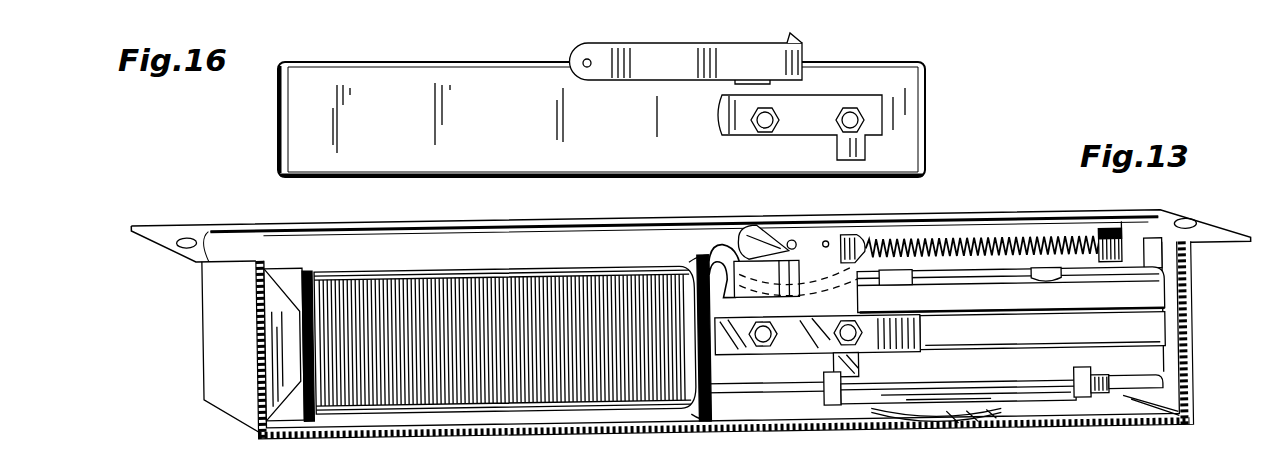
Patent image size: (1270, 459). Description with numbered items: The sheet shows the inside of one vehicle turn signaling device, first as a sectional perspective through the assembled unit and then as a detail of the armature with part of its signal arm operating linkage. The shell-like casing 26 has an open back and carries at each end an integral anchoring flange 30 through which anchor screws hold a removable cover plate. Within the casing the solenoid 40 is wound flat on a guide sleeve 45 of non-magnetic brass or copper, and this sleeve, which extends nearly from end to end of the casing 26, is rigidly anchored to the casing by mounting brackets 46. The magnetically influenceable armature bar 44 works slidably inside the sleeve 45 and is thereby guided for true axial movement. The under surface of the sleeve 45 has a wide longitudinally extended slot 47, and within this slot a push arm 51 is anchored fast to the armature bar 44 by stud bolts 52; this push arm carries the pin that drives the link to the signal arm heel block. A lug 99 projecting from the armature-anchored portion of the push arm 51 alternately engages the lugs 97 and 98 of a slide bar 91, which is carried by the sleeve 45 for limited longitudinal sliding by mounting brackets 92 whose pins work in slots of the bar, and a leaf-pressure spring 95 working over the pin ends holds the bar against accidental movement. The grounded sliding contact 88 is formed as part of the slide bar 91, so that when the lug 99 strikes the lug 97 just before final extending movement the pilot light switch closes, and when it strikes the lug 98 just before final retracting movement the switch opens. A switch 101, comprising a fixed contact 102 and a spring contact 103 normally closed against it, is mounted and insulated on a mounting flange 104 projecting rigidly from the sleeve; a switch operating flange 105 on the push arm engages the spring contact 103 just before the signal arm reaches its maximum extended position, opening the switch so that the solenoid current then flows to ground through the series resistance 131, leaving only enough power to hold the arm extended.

In FIG. 13, the casing 26 is at (220, 368).
In FIG. 13, the anchoring flange 30 is at (195, 255).
In FIG. 13, the solenoid 40 is at (438, 267).
In FIG. 16, the armature bar 44 is at (601, 119).
In FIG. 13, the armature bar 44 is at (927, 336).
In FIG. 13, the guide sleeve 45 is at (1153, 303).
In FIG. 13, the mounting bracket 46 is at (282, 323).
In FIG. 13, the slot 47 is at (1152, 324).
In FIG. 16, the push arm 51 is at (672, 75).
In FIG. 13, the push arm 51 is at (738, 272).
In FIG. 16, the stud bolts 52 is at (765, 133).
In FIG. 13, the stud bolts 52 is at (763, 335).
In FIG. 13, the sliding contact 88 is at (1108, 388).
In FIG. 13, the slide bar 91 is at (1085, 406).
In FIG. 13, the mounting brackets 92 is at (935, 394).
In FIG. 13, the leaf-pressure spring 95 is at (990, 423).
In FIG. 13, the slide bar lug 97 is at (824, 380).
In FIG. 13, the slide bar lug 98 is at (1085, 373).
In FIG. 16, the lug 99 is at (852, 165).
In FIG. 13, the lug 99 is at (862, 370).
In FIG. 13, the switch 101 is at (848, 247).
In FIG. 13, the fixed contact 102 is at (768, 252).
In FIG. 13, the spring contact 103 is at (744, 250).
In FIG. 13, the mounting flange 104 is at (863, 245).
In FIG. 16, the switch operating flange 105 is at (802, 38).
In FIG. 13, the switch operating flange 105 is at (814, 242).
In FIG. 13, the series resistance 131 is at (1026, 250).